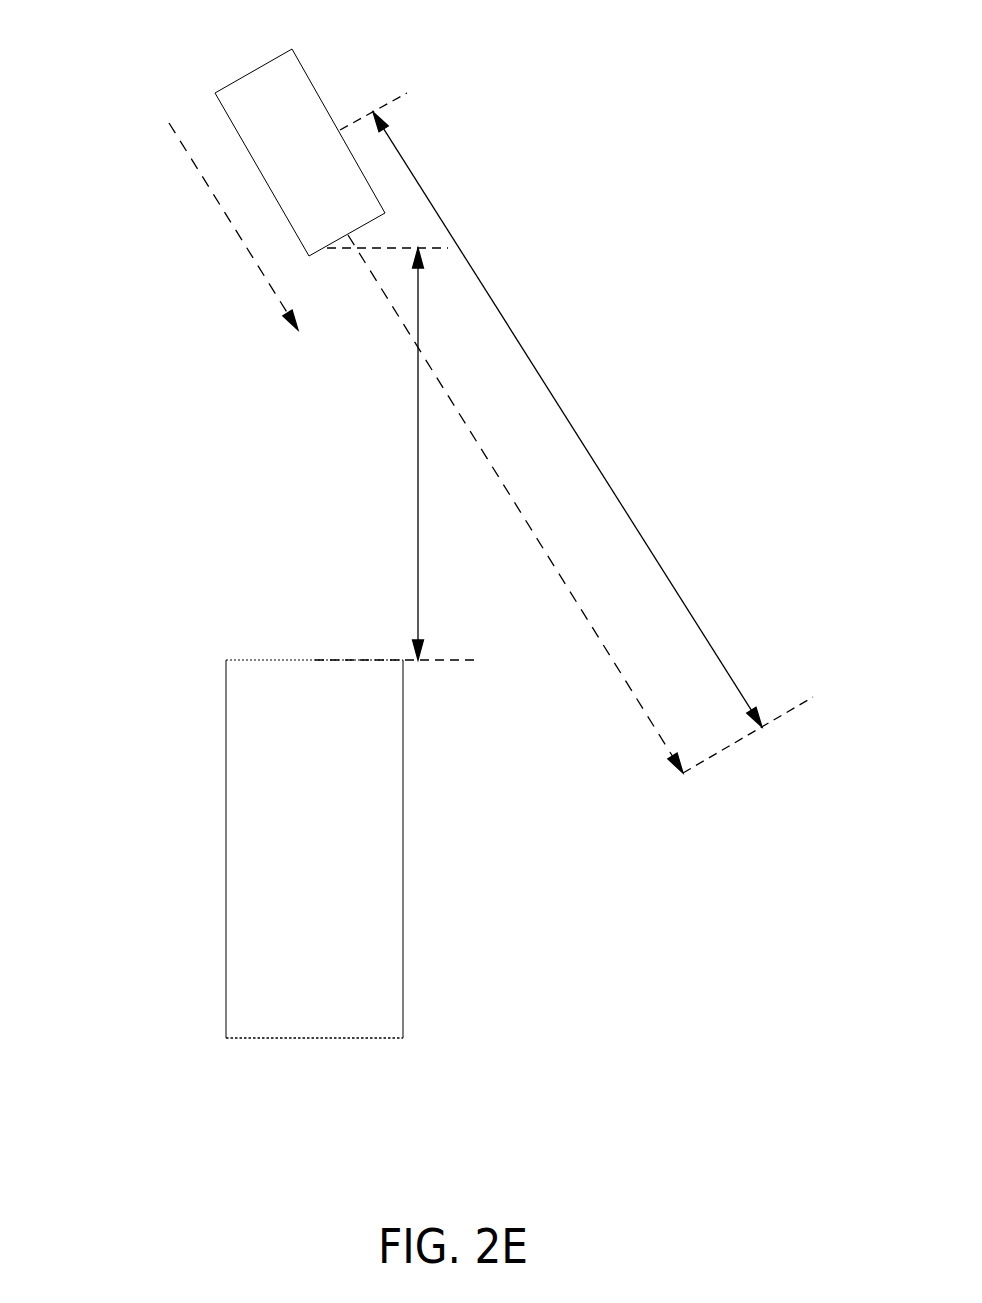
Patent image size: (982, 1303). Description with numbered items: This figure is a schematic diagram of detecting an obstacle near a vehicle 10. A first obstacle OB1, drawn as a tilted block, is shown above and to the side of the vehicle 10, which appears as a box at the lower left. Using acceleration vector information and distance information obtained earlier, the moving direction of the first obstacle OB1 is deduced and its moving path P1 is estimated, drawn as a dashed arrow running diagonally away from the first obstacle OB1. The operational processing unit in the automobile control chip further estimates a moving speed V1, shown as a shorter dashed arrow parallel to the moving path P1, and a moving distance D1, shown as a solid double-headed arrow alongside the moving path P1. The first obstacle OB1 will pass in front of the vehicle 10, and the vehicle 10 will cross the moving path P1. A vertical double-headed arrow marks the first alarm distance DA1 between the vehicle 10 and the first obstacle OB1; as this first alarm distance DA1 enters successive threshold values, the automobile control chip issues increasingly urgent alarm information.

The first obstacle OB1 is at (242, 83).
The moving speed V1 is at (232, 226).
The moving distance D1 is at (505, 315).
The moving path P1 is at (487, 458).
The first alarm distance DA1 is at (418, 475).
The vehicle 10 is at (315, 660).